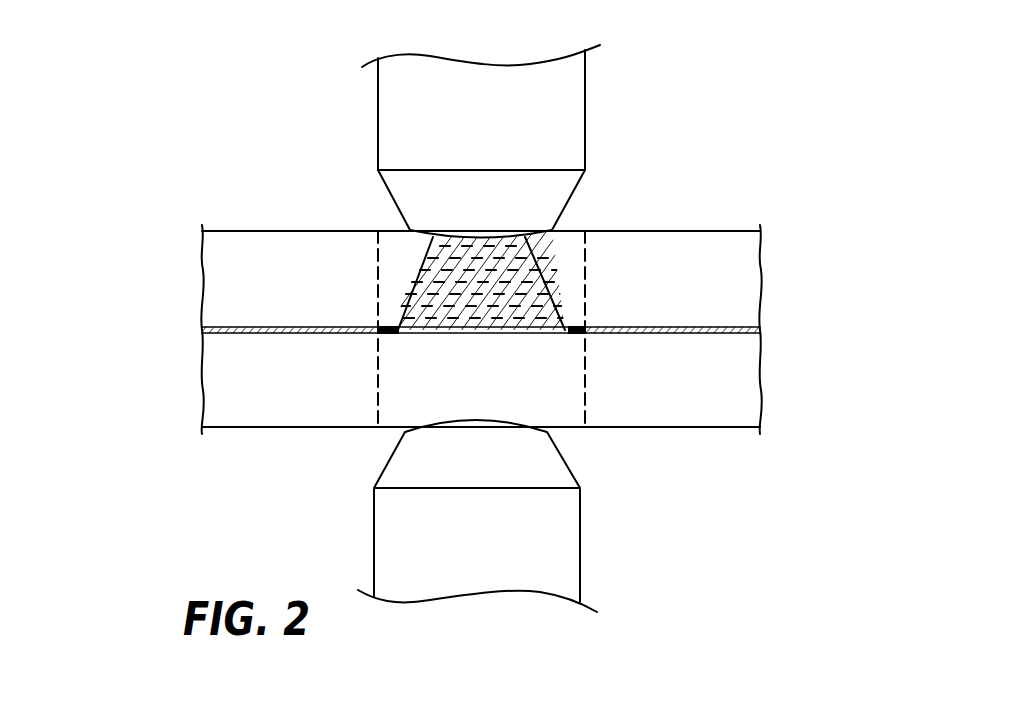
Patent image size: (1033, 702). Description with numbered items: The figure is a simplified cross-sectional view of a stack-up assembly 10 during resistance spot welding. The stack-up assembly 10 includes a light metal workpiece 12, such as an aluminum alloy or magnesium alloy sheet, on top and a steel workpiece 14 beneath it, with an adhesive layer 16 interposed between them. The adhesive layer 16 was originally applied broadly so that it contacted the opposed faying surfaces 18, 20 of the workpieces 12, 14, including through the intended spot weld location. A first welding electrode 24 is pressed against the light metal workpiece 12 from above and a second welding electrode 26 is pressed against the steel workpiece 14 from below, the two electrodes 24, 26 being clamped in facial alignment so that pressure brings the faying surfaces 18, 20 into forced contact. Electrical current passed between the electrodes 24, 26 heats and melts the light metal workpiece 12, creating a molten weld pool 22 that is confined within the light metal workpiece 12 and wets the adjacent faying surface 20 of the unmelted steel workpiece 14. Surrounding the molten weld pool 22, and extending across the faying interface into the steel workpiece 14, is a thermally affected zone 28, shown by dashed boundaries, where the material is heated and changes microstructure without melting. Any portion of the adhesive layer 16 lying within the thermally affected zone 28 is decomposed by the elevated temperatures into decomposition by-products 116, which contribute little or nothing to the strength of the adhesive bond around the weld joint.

The stack-up assembly 10 is at (164, 316).
The light metal workpiece 12 is at (202, 282).
The steel workpiece 14 is at (202, 377).
The adhesive layer 16 is at (202, 328).
The faying surface of the light metal workpiece 18 is at (644, 327).
The faying surface of the steel workpiece 20 is at (690, 327).
The molten weld pool 22 is at (500, 276).
The first welding electrode 24 is at (527, 129).
The second welding electrode 26 is at (549, 544).
The thermally affected zone 28 is at (377, 372).
The decomposition by-products 116 is at (578, 334).